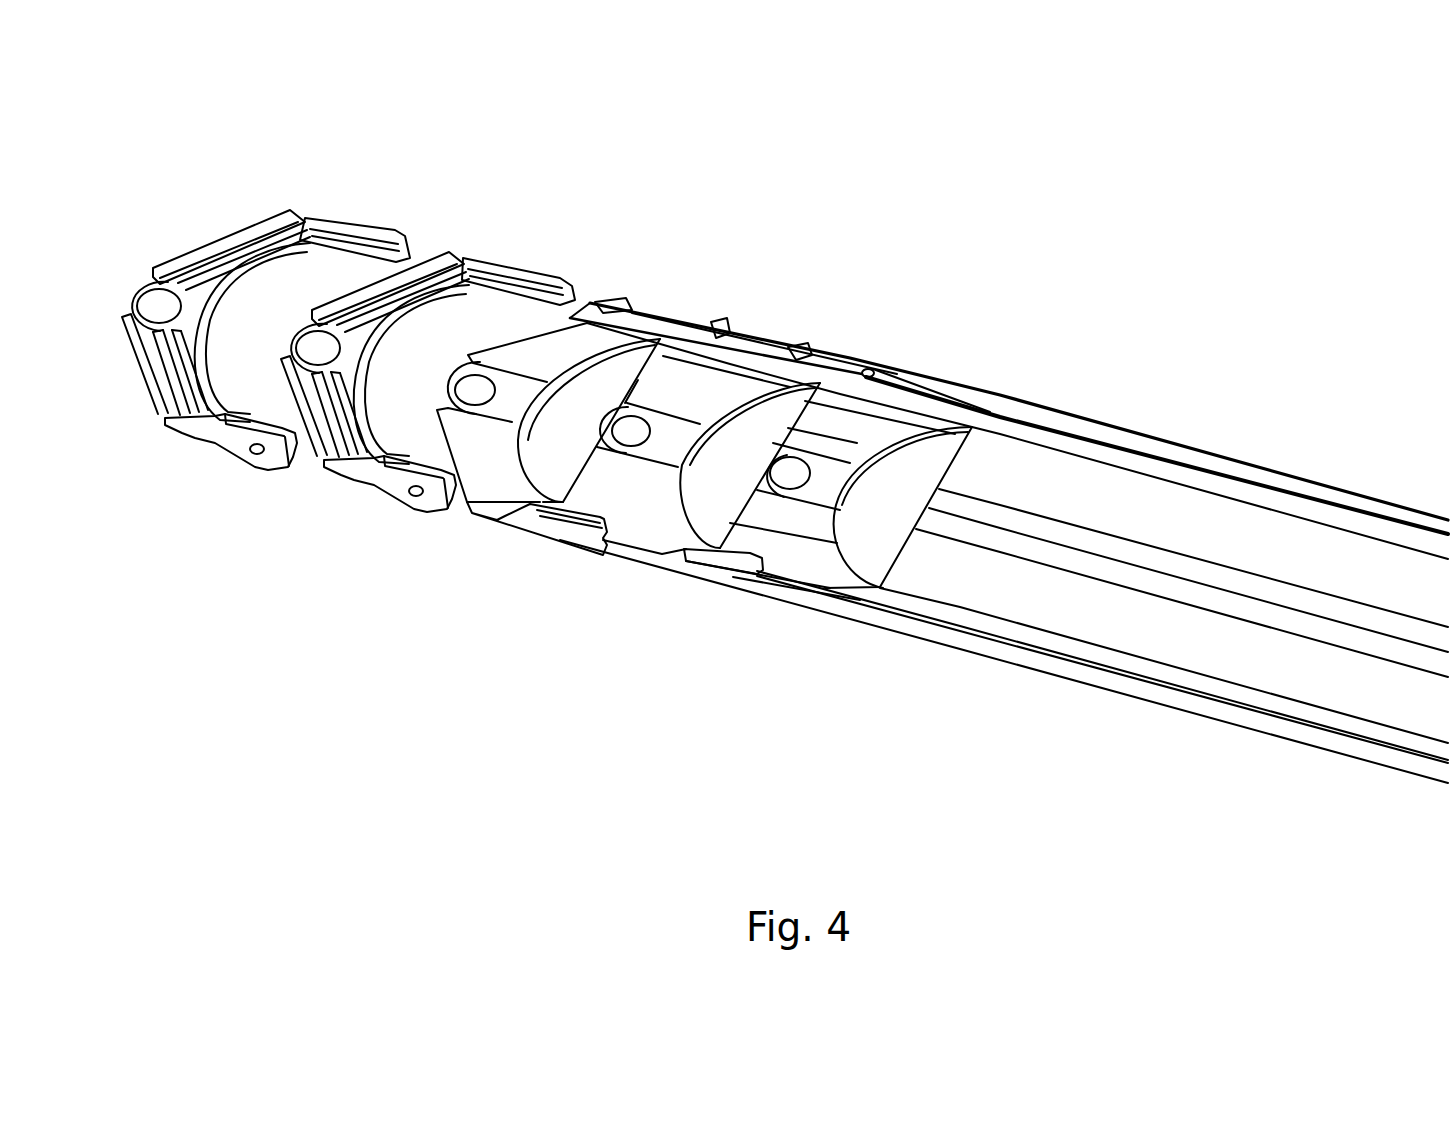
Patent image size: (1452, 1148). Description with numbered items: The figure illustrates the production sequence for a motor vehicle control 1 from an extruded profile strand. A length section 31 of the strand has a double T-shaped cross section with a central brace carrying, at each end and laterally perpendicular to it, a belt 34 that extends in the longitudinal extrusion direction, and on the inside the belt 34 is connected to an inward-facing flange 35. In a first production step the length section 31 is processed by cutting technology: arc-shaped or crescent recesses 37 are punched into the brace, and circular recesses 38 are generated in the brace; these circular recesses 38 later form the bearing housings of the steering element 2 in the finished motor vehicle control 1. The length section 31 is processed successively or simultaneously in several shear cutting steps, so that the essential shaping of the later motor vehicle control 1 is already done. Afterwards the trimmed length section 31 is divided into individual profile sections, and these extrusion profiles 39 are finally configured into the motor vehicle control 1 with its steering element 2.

The motor vehicle control 1 is at (213, 185).
The steering element 2 is at (1207, 653).
The length section 31 is at (1208, 452).
The belt 34 is at (1173, 703).
The flange 35 is at (1342, 497).
The arc-shaped or crescent recess 37 is at (885, 540).
The circular recess 38 is at (872, 372).
The extrusion profile 39 is at (497, 257).